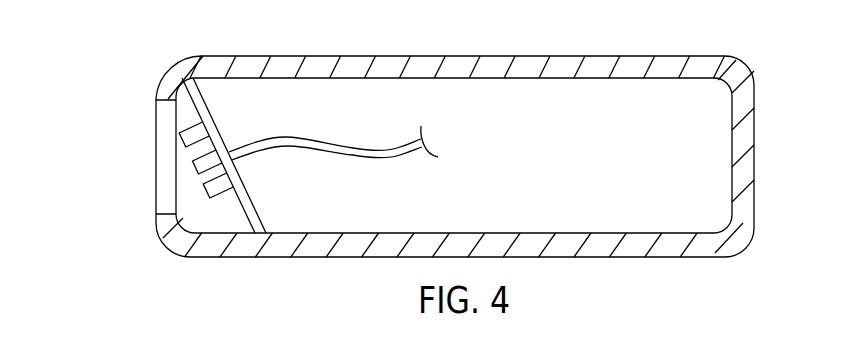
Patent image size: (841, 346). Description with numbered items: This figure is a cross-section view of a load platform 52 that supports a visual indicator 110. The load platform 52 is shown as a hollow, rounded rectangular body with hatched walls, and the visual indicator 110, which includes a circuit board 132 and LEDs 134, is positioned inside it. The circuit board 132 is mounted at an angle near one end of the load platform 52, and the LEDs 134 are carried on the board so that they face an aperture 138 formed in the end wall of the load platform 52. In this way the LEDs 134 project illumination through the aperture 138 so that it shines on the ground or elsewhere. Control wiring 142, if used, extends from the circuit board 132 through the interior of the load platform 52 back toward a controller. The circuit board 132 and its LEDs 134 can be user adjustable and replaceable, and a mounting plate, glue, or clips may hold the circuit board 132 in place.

The load platform 52 is at (742, 68).
The visual indicator 110 is at (122, 188).
The circuit board 132 is at (210, 118).
The LEDs 134 is at (207, 190).
The aperture 138 is at (167, 153).
The control wiring 142 is at (357, 157).